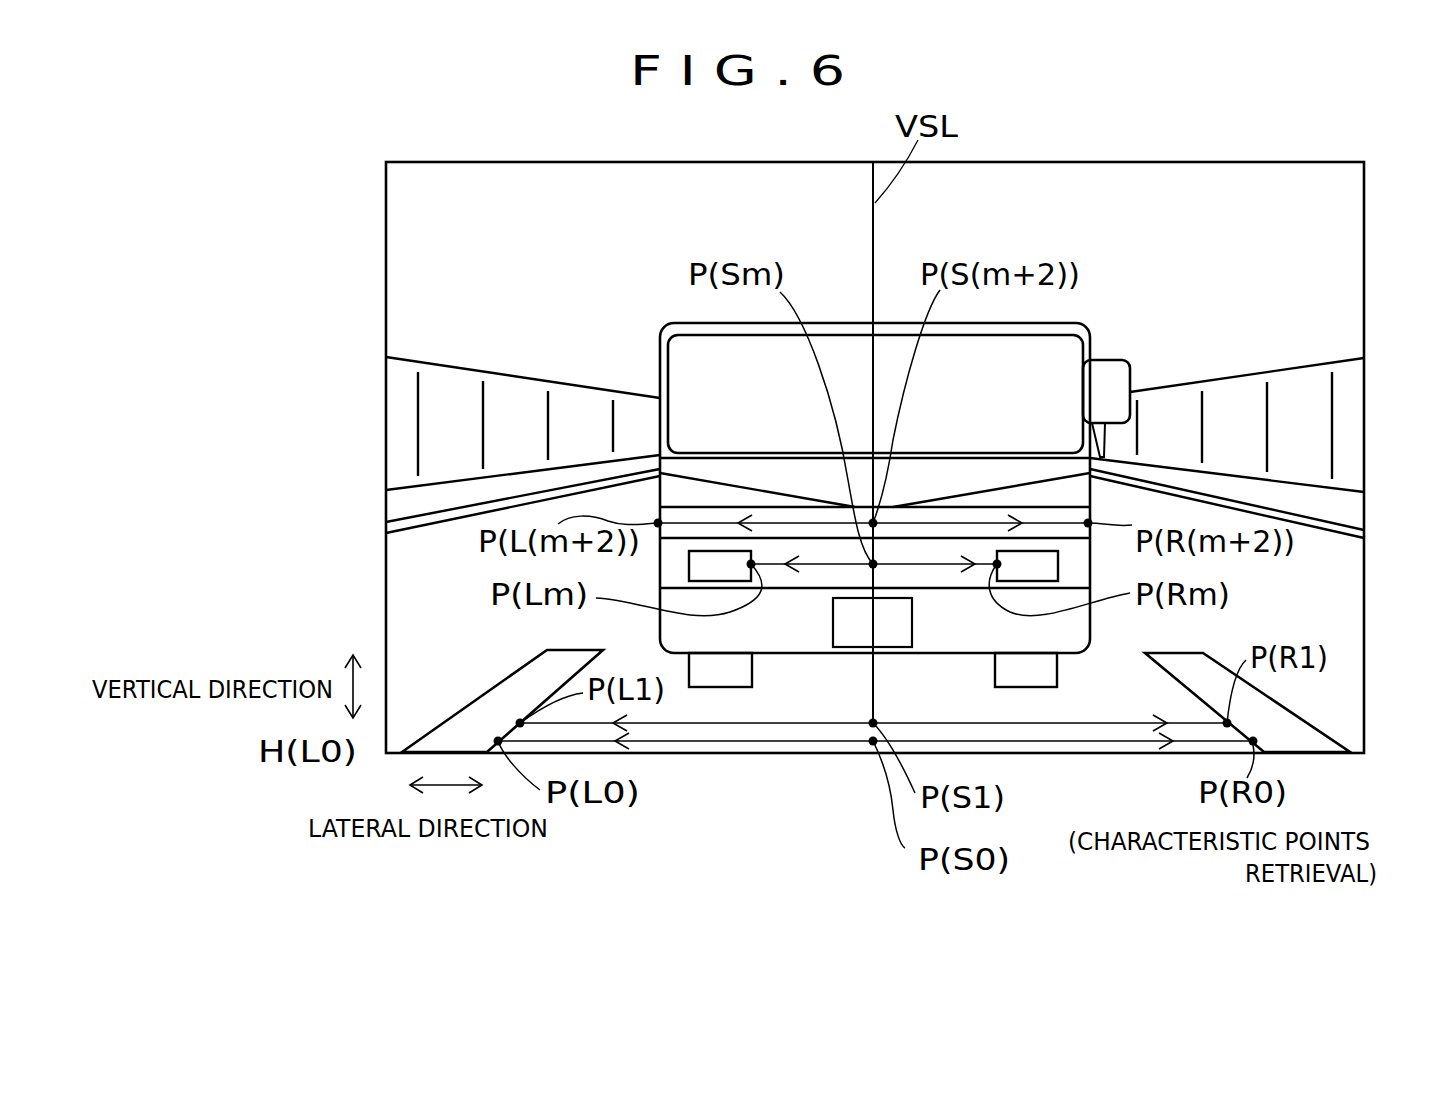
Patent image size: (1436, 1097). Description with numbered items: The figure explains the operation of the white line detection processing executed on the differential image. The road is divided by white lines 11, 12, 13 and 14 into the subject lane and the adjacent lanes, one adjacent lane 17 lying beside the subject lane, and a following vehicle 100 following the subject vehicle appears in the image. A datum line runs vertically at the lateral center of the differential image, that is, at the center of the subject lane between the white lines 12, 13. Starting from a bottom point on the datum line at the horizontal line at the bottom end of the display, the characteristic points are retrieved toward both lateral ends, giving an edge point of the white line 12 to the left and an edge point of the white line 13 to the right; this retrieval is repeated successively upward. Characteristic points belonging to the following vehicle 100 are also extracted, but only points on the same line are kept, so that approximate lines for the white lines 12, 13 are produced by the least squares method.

The following vehicle 100 is at (1066, 323).
The adjacent lane 17 is at (460, 405).
The white line 11 is at (396, 527).
The white line 14 is at (1364, 534).
The white line 12 is at (478, 708).
The white line 13 is at (1298, 735).